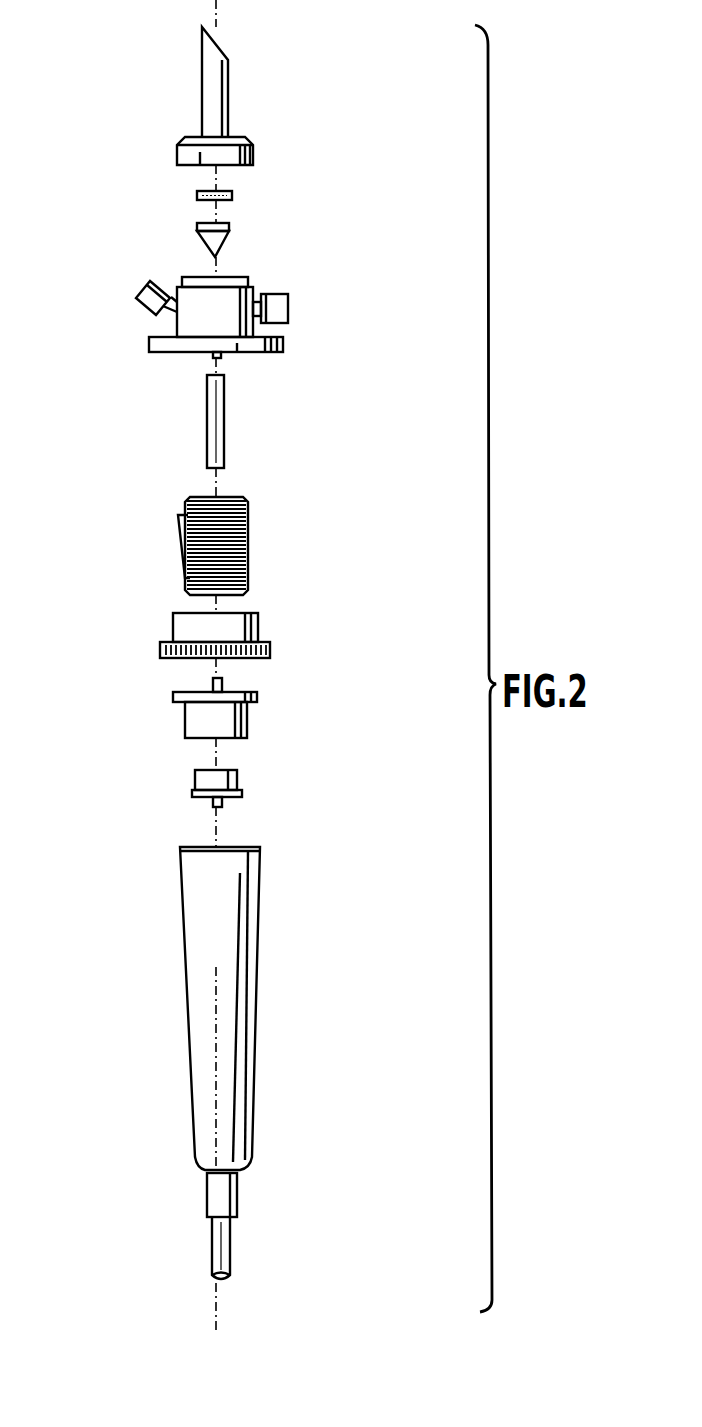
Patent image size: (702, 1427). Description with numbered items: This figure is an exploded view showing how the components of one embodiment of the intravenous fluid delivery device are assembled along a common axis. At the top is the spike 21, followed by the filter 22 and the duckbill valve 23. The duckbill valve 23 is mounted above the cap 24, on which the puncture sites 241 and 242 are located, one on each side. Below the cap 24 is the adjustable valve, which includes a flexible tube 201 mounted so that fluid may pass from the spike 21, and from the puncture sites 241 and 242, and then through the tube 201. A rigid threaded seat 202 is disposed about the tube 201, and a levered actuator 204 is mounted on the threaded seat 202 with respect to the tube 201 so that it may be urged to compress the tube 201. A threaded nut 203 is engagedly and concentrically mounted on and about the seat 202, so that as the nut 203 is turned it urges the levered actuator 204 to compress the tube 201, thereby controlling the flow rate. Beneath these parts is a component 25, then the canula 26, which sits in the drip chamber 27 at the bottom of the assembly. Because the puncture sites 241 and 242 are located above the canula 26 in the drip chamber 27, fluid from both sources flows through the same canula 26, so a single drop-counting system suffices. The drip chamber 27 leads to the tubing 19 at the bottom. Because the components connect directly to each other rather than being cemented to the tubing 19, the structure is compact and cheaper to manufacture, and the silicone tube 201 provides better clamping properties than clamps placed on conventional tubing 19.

The tubing 19 is at (230, 1242).
The spike 21 is at (228, 97).
The filter 22 is at (218, 200).
The duckbill valve 23 is at (225, 245).
The cap 24 is at (283, 346).
The puncture site 241 is at (288, 308).
The puncture site 242 is at (142, 289).
The flexible tube 201 is at (217, 422).
The threaded seat 202 is at (250, 540).
The threaded nut 203 is at (247, 633).
The levered actuator 204 is at (178, 530).
The flanged bushing 25 is at (257, 697).
The canula 26 is at (240, 783).
The drip chamber 27 is at (258, 891).